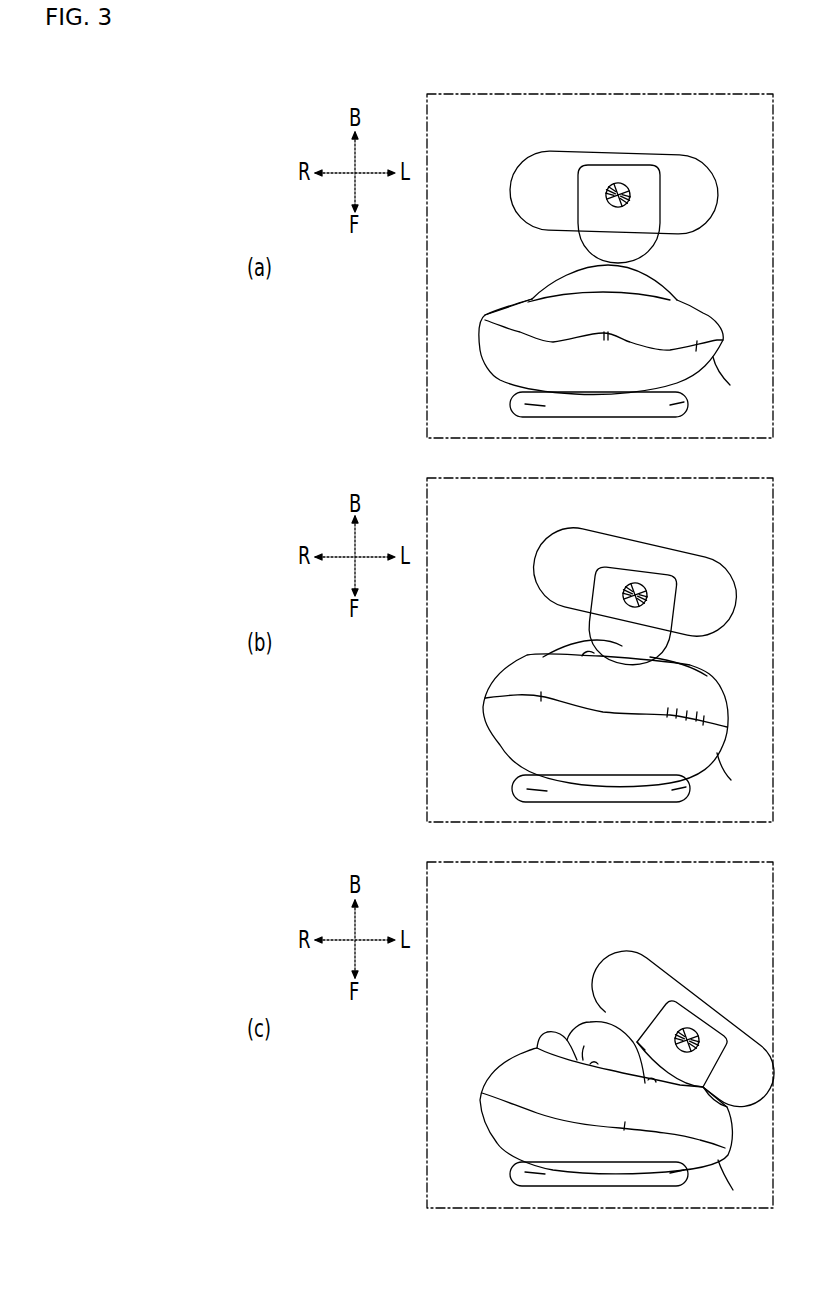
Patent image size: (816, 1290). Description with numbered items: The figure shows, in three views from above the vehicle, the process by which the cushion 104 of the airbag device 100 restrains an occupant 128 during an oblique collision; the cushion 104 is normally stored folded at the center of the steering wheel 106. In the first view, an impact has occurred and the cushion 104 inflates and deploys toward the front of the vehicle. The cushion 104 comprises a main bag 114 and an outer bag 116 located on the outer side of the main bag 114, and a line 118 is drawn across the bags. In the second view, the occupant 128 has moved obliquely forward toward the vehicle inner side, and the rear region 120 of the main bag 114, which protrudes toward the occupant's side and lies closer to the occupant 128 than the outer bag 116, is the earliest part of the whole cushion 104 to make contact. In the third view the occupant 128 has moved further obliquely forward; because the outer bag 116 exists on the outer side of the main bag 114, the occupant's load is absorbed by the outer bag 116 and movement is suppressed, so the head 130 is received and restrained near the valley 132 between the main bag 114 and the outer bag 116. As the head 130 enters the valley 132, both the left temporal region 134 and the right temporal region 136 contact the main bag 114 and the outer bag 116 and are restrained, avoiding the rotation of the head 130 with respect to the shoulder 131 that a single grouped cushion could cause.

The airbag device 100 is at (453, 399).
The cushion 104 is at (743, 779).
The steering wheel 106 is at (633, 418).
The main bag 114 is at (538, 291).
The outer bag 116 is at (484, 328).
The torso seam line 118 is at (578, 292).
The rear region 120 is at (577, 270).
The occupant 128 is at (584, 165).
The head 130 is at (630, 173).
The shoulder 131 is at (530, 171).
The valley 132 is at (652, 1083).
The left temporal region 134 is at (708, 1085).
The right temporal region 136 is at (637, 1040).